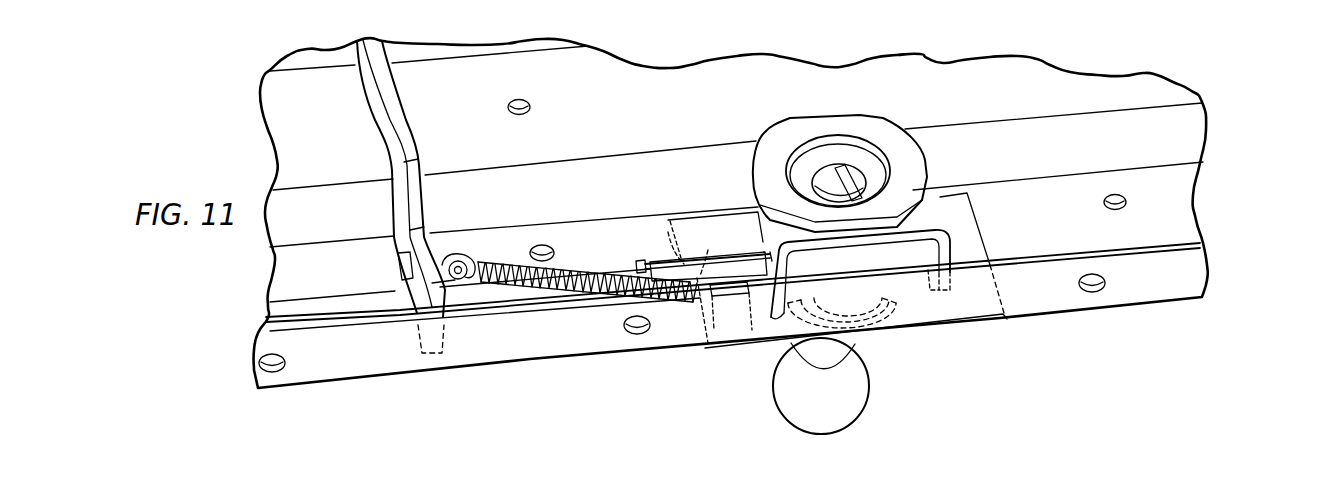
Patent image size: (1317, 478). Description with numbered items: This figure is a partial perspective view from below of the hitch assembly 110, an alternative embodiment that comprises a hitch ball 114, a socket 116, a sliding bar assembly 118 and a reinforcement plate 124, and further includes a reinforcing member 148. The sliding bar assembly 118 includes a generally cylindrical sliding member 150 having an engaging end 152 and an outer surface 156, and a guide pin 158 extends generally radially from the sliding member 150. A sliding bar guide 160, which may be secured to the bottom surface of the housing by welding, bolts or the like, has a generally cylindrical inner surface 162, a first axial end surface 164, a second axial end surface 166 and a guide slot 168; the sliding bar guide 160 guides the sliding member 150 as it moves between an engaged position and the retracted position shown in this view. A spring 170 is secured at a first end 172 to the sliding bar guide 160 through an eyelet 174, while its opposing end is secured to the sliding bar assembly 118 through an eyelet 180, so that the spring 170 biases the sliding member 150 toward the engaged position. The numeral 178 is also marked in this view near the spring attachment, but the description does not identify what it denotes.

The hitch assembly 110 is at (1218, 71).
The hitch ball 114 is at (855, 432).
The socket 116 is at (936, 195).
The sliding bar assembly 118 is at (520, 313).
The reinforcement plate 124 is at (1005, 326).
The reinforcing member 148 is at (945, 234).
The sliding member 150 is at (328, 308).
The engaging end 152 is at (880, 331).
The outer surface 156 is at (374, 309).
The guide pin 158 is at (636, 262).
The sliding bar guide 160 is at (740, 253).
The inner surface 162 is at (739, 272).
The first axial end surface 164 is at (768, 240).
The second axial end surface 166 is at (628, 266).
The guide slot 168 is at (660, 258).
The spring 170 is at (550, 291).
The first end 172 is at (697, 300).
The eyelet 174 is at (716, 320).
The hook 178 is at (462, 285).
The eyelet 180 is at (455, 283).